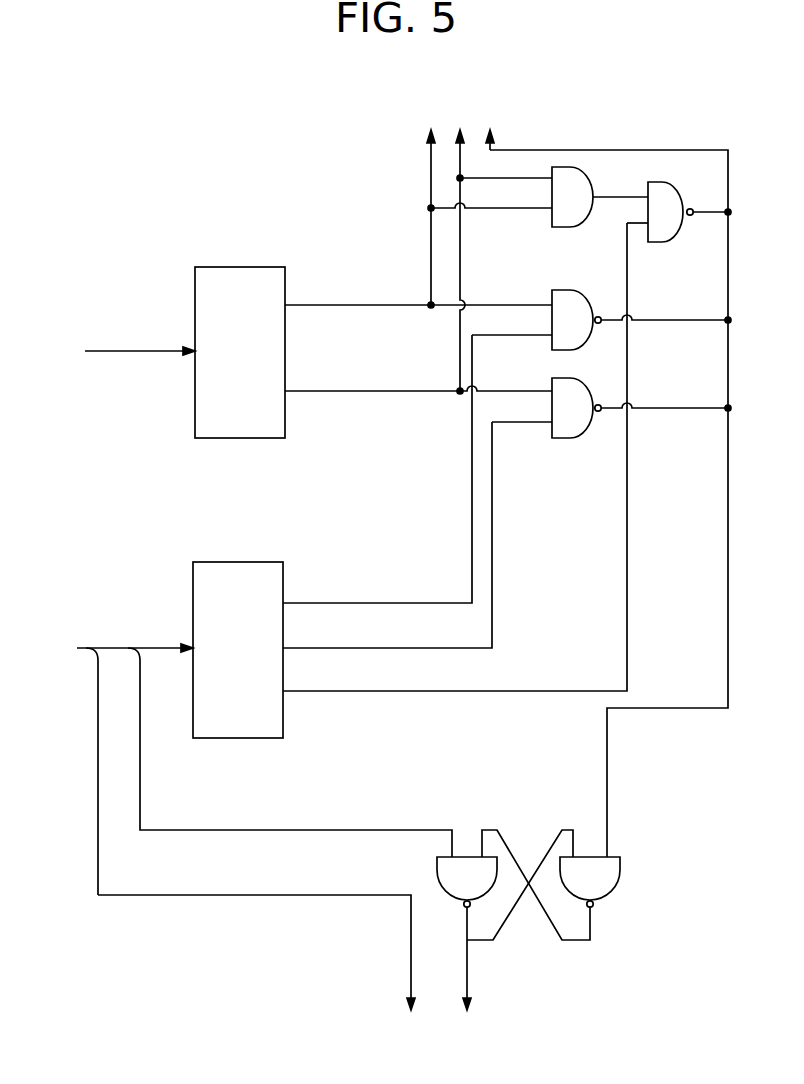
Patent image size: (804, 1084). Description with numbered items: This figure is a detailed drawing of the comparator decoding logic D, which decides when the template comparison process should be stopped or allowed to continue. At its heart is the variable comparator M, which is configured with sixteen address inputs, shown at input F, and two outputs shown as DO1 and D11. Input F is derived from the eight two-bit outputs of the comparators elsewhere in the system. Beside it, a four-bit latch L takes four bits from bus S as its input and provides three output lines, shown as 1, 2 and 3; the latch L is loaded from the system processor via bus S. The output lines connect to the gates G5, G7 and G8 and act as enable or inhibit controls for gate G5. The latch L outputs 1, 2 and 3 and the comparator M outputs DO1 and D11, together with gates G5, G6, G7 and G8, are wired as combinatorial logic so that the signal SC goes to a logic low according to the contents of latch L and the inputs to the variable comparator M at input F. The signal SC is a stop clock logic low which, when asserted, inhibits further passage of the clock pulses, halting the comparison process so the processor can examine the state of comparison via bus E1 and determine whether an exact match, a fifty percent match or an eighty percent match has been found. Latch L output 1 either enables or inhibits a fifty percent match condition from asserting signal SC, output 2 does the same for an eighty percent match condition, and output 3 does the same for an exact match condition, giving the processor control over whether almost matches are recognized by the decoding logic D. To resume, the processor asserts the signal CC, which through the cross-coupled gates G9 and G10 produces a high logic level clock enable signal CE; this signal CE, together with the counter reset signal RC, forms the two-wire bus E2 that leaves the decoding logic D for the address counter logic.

The bus E1 is at (503, 120).
The stop clock signal SC is at (733, 204).
The variable comparator M is at (240, 267).
The input F is at (112, 352).
The variable comparator output DO1 is at (316, 305).
The variable comparator output D11 is at (327, 392).
The gate G5 is at (679, 212).
The gate G6 is at (539, 197).
The gate G7 is at (601, 320).
The gate G8 is at (611, 408).
The latch output line 1 is at (390, 603).
The latch output line 2 is at (388, 648).
The latch output line 3 is at (502, 692).
The latch L is at (283, 718).
The bus S is at (77, 648).
The continue comparison signal CC is at (238, 828).
The counter reset signal RC is at (410, 968).
The clock enable signal CE is at (467, 968).
The two wire bus E2 is at (477, 1013).
The gate G9 is at (467, 882).
The gate G10 is at (590, 882).
The comparator decoding logic D is at (651, 752).